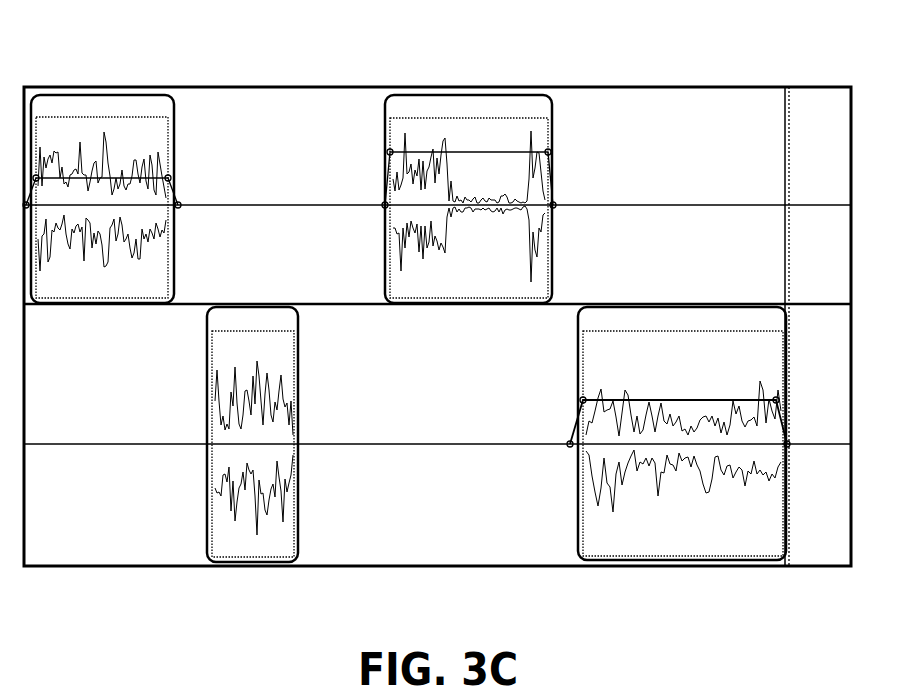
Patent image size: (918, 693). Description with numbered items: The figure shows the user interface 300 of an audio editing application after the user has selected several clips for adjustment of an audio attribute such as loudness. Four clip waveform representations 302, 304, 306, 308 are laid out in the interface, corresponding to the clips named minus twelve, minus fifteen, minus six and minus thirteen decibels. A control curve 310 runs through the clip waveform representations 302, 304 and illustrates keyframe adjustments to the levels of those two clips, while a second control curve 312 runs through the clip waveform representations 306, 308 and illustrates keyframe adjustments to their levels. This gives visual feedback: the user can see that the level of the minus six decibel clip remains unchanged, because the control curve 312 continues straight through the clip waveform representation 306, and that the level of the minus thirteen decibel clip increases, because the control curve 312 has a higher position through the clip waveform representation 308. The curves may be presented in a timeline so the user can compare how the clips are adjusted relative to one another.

The user interface 300 is at (138, 58).
The clip waveform representation 302 is at (148, 130).
The clip waveform representation 304 is at (512, 148).
The clip waveform representation 306 is at (275, 542).
The clip waveform representation 308 is at (670, 528).
The control curve 310 is at (277, 205).
The control curve 312 is at (435, 445).